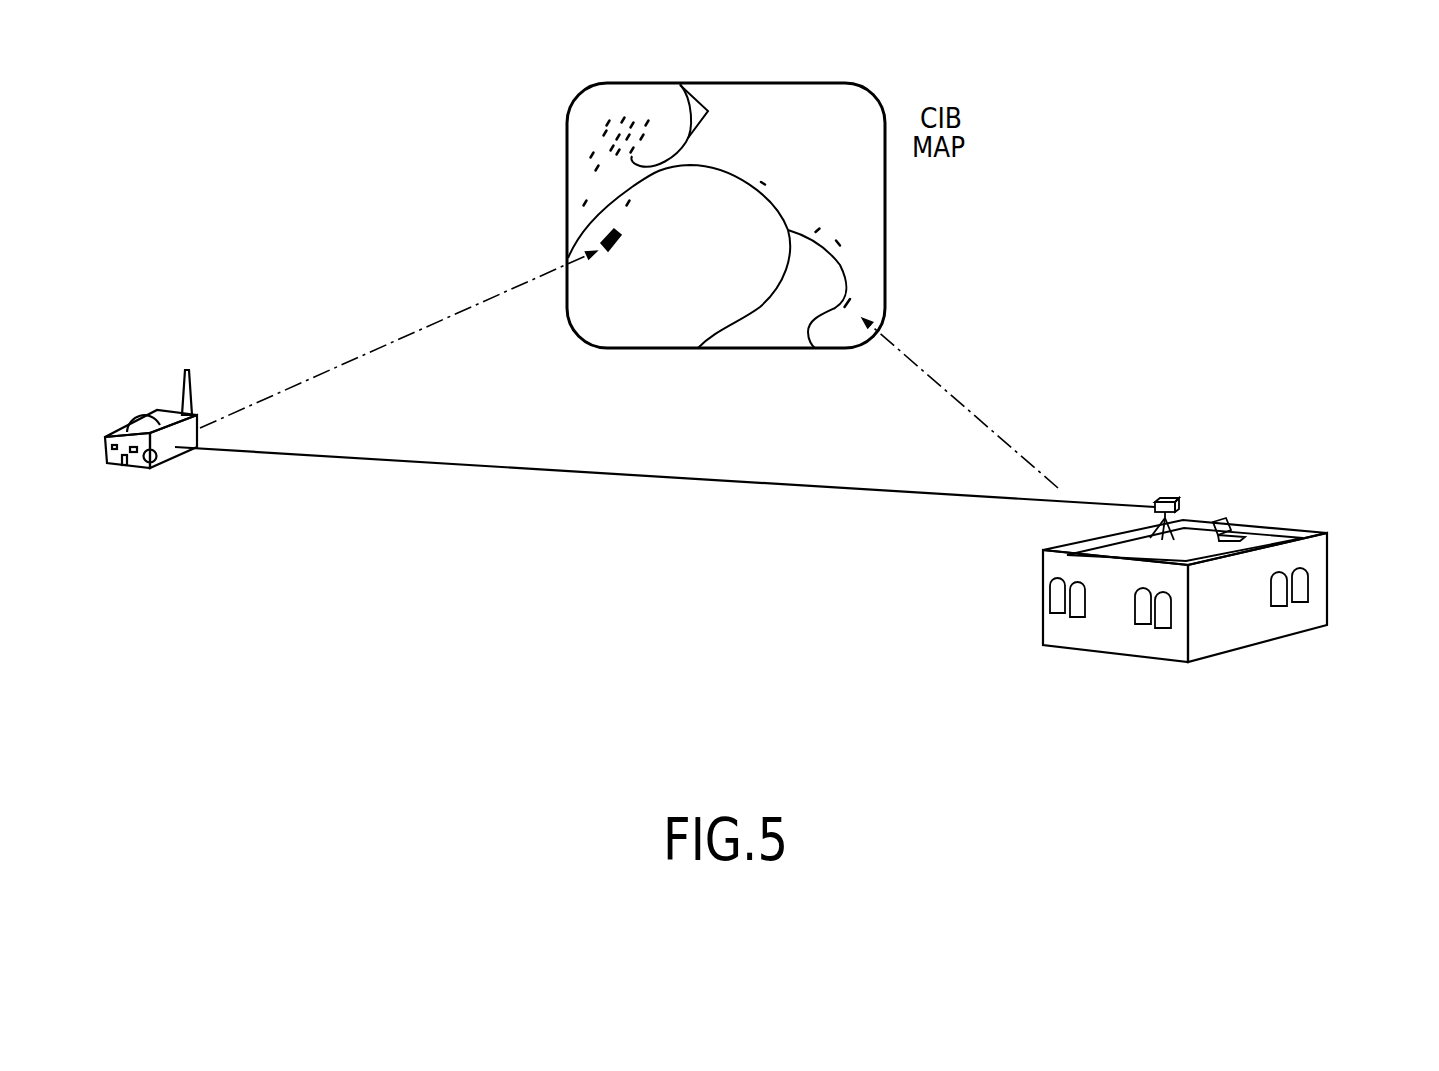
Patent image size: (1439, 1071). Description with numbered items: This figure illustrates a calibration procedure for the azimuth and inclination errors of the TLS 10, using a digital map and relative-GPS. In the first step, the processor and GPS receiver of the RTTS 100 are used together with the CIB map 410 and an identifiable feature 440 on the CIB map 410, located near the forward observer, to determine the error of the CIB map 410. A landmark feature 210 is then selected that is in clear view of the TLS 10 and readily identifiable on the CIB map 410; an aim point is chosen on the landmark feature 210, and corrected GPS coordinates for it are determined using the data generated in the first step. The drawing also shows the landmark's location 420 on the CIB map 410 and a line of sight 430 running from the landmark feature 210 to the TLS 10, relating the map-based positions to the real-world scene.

The TLS 10 is at (1234, 643).
The RTTS 100 is at (1235, 520).
The landmark feature 210 is at (132, 467).
The CIB map 410 is at (590, 318).
The target location on CIB map 420 is at (850, 320).
The line of sight from landmark to target 430 is at (575, 471).
The identifiable feature 440 is at (1098, 630).